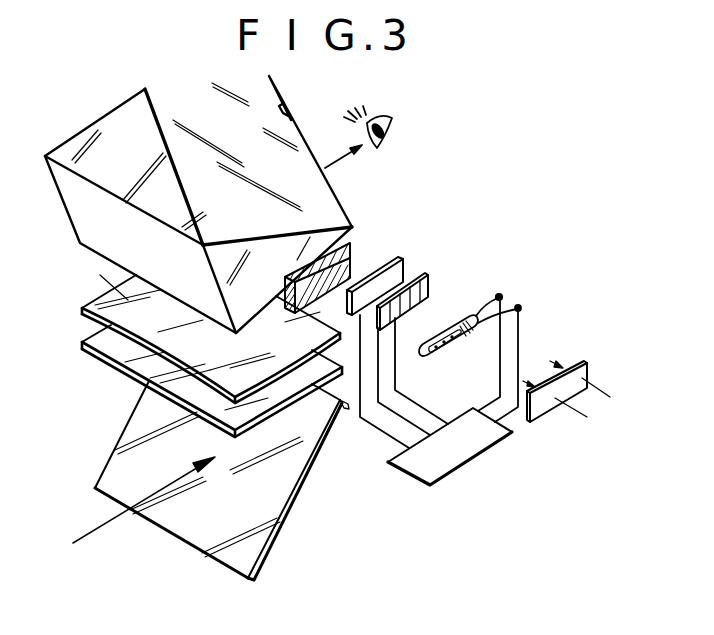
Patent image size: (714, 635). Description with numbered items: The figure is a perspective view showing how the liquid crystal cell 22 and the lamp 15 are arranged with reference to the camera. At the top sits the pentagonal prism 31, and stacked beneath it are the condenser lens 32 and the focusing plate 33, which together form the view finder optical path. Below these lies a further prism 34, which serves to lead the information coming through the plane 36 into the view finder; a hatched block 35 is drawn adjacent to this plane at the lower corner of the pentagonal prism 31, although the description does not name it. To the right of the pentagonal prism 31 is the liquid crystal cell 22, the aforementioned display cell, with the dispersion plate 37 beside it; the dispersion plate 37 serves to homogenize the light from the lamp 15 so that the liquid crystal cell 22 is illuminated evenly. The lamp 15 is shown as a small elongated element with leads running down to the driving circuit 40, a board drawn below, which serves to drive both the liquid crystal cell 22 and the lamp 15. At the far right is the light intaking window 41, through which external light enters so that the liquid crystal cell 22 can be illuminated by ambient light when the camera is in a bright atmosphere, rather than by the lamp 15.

The pentagonal prism 31 is at (281, 100).
The condenser lens 32 is at (82, 310).
The focusing plate 33 is at (130, 368).
The prism 34 is at (108, 497).
The light guide block 35 is at (350, 262).
The plane 36 is at (352, 243).
The liquid crystal cell 22 is at (405, 262).
The dispersion plate 37 is at (433, 290).
The lamp 15 is at (448, 346).
The driving circuit 40 is at (465, 465).
The light intaking window 41 is at (590, 362).